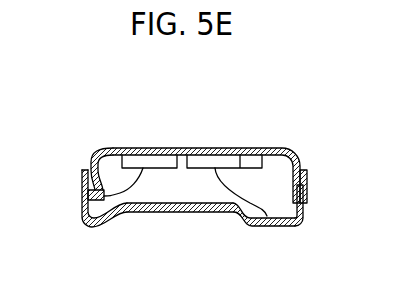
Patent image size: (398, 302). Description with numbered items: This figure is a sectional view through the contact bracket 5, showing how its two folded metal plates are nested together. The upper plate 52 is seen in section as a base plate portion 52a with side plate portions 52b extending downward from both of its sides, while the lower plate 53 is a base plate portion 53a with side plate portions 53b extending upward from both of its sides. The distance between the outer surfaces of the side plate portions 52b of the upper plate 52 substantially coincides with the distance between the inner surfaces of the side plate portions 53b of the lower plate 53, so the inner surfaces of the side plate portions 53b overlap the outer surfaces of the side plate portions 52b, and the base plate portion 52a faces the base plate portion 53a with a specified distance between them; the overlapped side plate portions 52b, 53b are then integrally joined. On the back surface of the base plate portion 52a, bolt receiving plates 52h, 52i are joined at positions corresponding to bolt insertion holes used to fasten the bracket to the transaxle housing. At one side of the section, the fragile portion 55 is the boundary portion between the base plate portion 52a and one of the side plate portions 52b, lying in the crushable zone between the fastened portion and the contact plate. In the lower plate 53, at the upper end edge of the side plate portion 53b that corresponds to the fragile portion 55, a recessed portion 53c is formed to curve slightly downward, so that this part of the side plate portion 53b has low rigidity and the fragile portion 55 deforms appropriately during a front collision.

The contact bracket 5 is at (84, 80).
The upper plate 52 is at (179, 176).
The base plate portion 52a is at (194, 147).
The side plate portion 52b is at (308, 178).
The bolt receiving plate 52h is at (101, 227).
The bolt receiving plate 52i is at (268, 227).
The lower plate 53 is at (193, 201).
The base plate portion 53a is at (155, 213).
The side plate portion 53b is at (305, 203).
The recessed portion 53c is at (84, 171).
The fragile portion 55 is at (100, 147).